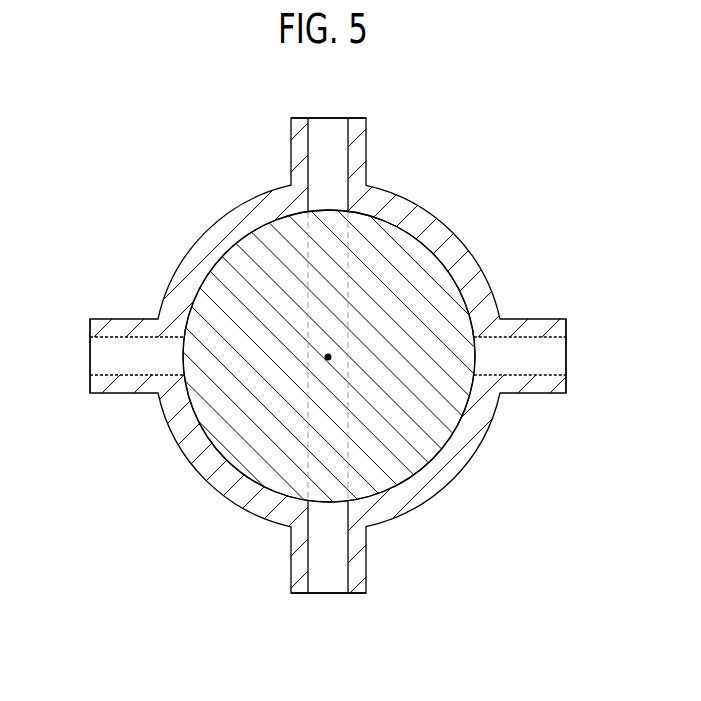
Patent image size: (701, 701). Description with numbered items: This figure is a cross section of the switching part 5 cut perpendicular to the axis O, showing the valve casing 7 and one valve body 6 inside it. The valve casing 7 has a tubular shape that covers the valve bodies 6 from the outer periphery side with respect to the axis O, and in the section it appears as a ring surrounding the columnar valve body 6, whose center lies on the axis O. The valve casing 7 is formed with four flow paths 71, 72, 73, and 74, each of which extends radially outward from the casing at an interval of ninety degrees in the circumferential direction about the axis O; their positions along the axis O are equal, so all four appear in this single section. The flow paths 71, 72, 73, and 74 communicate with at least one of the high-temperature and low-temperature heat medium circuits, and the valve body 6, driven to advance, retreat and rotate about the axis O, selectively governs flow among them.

The switching part 5 is at (117, 143).
The valve body 6 is at (398, 259).
The valve casing 7 is at (445, 482).
The flow path 71 is at (316, 127).
The flow path 72 is at (316, 572).
The flow path 73 is at (551, 372).
The flow path 74 is at (108, 373).
The axis O is at (328, 357).